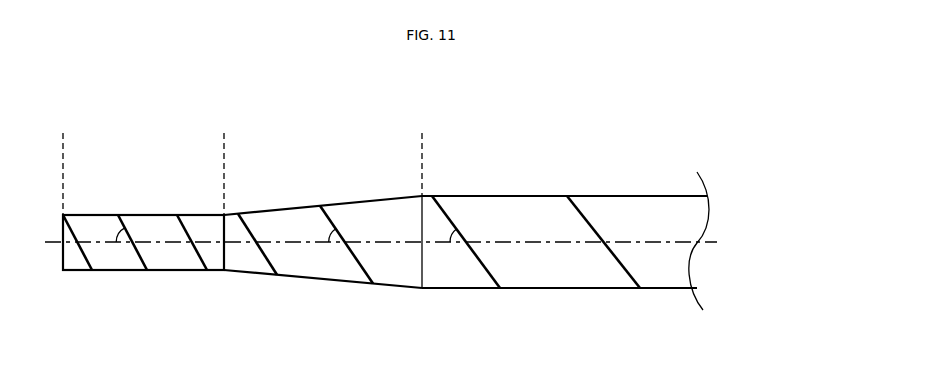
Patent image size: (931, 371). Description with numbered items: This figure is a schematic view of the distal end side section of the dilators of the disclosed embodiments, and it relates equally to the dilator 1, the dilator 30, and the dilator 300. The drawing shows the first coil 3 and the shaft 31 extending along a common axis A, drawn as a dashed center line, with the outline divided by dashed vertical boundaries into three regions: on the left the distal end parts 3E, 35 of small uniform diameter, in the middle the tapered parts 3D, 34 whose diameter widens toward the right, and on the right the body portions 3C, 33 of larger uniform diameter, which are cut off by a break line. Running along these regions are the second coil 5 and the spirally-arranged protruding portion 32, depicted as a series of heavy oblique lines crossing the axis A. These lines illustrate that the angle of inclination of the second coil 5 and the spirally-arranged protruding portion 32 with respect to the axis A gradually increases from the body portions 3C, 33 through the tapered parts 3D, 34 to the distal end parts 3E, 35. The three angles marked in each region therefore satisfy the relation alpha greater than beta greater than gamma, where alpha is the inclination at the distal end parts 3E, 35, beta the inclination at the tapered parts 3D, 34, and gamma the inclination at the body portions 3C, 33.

The dilator 1 is at (435, 213).
The dilator 30 is at (435, 213).
The dilator 300 is at (435, 213).
The first coil 3 is at (564, 170).
The shaft 31 is at (620, 183).
The second coil 5 is at (606, 266).
The spirally-arranged protruding portion 32 is at (622, 270).
The distal end part 3E is at (143, 179).
The distal end part 35 is at (224, 131).
The tapered part 3D is at (323, 188).
The tapered part 34 is at (422, 131).
The body portion 3C is at (564, 213).
The body portion 33 is at (564, 213).
The axis A is at (53, 243).